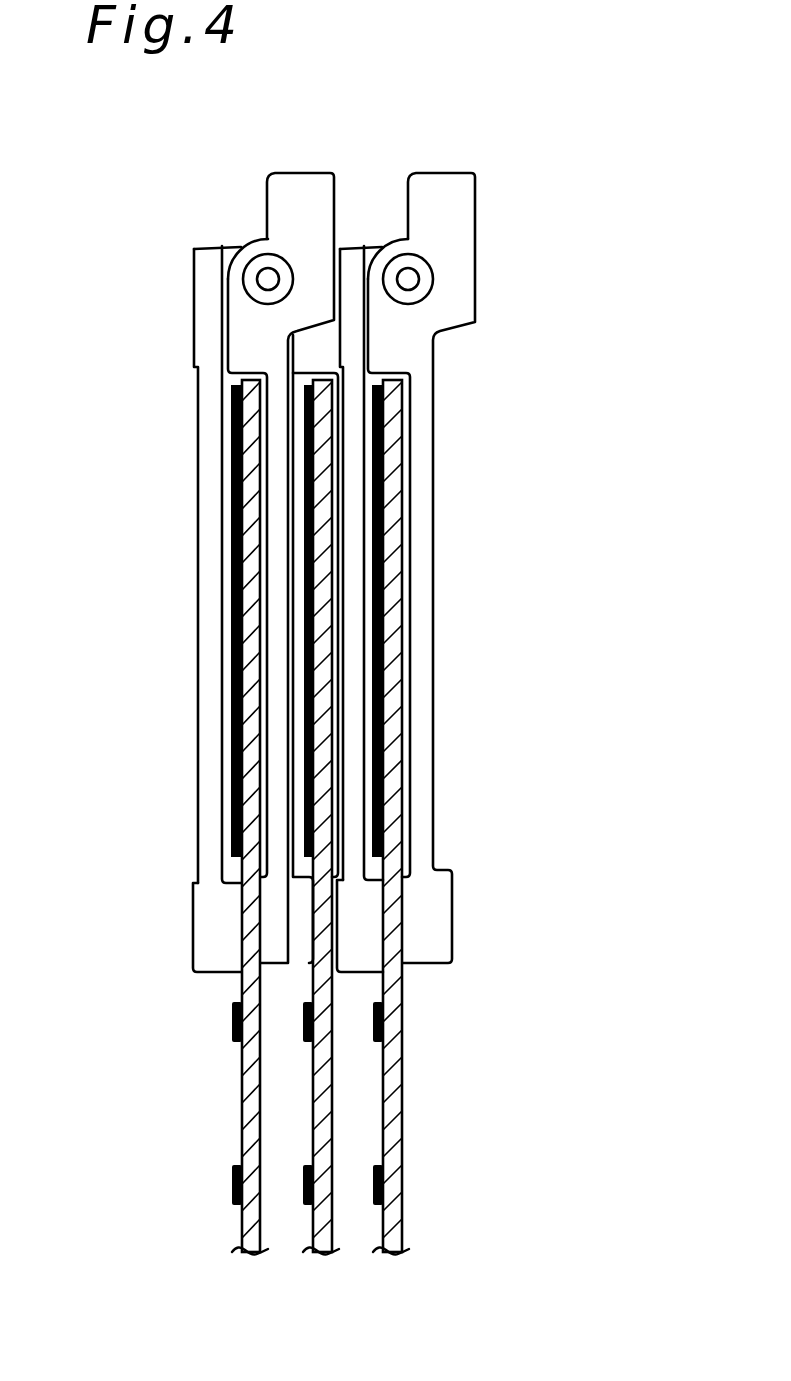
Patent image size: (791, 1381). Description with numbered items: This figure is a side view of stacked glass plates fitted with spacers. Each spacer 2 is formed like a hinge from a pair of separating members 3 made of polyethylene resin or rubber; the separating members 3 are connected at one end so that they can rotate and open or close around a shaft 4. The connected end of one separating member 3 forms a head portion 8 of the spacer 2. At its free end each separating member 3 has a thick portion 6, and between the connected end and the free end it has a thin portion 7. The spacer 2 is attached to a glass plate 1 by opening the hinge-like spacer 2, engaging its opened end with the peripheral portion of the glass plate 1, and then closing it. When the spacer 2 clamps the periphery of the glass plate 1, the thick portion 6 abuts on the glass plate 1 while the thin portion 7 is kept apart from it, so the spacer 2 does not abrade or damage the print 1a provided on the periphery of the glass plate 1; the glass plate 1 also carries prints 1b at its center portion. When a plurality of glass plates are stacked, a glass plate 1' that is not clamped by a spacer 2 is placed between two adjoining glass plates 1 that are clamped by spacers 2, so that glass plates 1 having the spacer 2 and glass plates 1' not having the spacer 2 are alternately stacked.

The glass plate 1 is at (388, 817).
The glass plate 1' is at (209, 817).
The print 1a is at (232, 600).
The prints 1b is at (372, 1200).
The spacer 2 is at (187, 453).
The separating member 3 is at (197, 697).
The shaft 4 is at (266, 279).
The thick portion 6 is at (210, 928).
The thin portion 7 is at (208, 520).
The head portion 8 is at (258, 330).